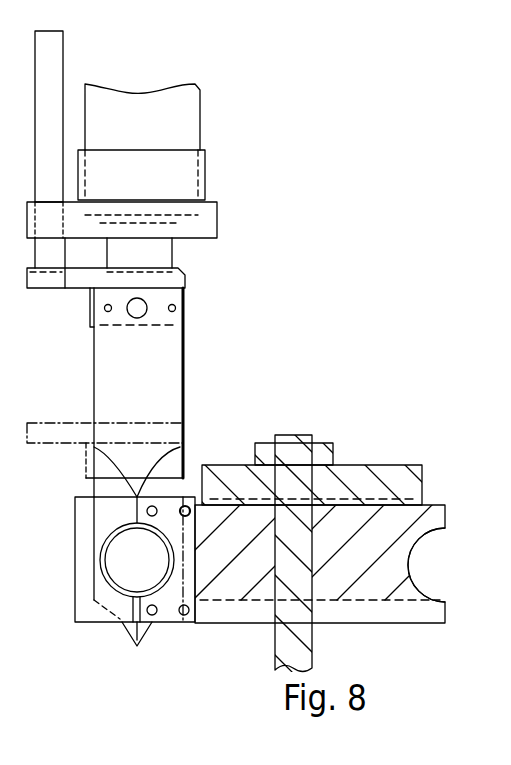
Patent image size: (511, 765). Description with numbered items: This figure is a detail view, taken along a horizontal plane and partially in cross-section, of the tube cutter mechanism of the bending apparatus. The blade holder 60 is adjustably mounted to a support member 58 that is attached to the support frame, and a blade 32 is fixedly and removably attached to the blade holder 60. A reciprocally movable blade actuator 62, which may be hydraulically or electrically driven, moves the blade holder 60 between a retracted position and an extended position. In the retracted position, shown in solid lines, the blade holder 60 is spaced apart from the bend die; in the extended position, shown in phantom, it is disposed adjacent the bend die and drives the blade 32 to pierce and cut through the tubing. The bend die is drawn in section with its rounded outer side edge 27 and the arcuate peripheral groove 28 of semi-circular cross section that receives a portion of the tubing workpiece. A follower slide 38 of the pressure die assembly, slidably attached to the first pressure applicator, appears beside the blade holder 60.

The support member 58 is at (36, 118).
The blade actuator 62 is at (213, 165).
The blade holder 60 is at (186, 274).
The blade 32 is at (146, 388).
The follower slide 38 is at (76, 605).
The outer side edge 27 is at (447, 506).
The arcuate peripheral groove 28 is at (412, 577).